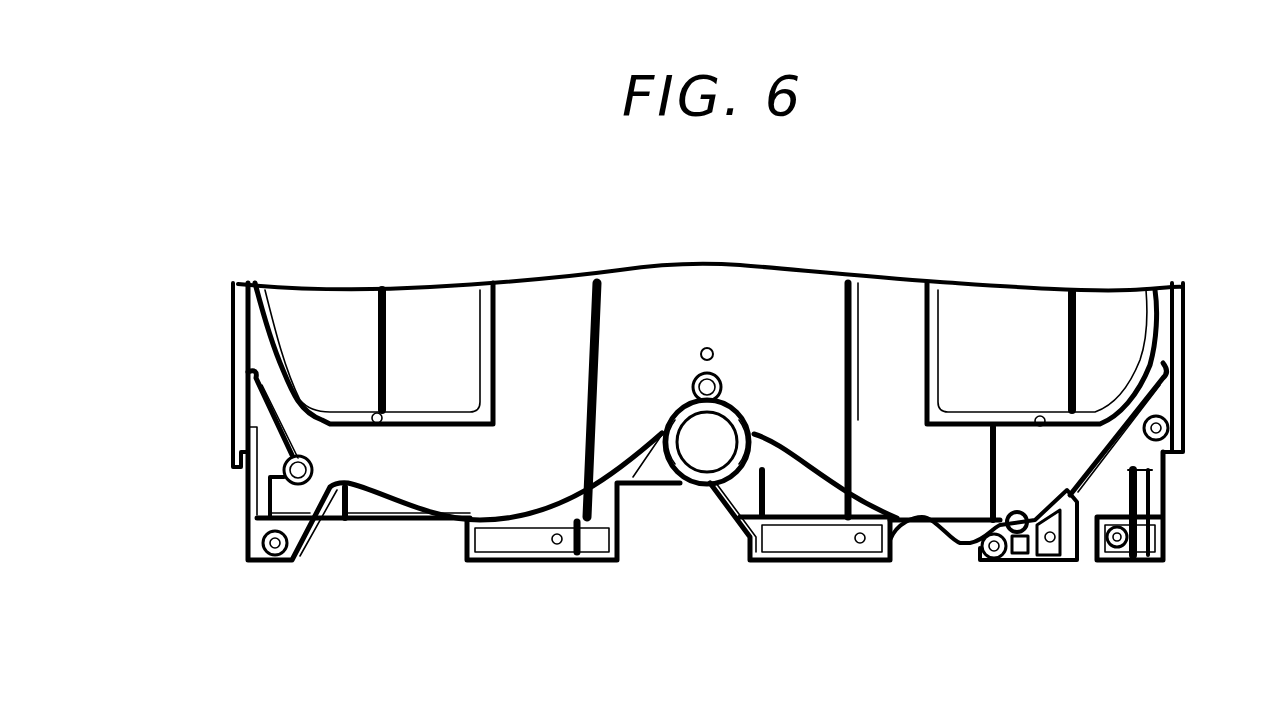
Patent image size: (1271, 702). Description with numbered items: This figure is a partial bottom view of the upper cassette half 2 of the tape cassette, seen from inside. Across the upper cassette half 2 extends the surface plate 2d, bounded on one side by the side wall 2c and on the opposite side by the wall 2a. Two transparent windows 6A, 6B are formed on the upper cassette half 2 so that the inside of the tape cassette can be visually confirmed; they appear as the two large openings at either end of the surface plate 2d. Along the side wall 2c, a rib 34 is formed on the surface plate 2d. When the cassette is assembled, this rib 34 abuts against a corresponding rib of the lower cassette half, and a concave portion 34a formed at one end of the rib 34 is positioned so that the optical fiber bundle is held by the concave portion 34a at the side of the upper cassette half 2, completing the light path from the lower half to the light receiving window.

The upper cassette half 2 is at (1128, 290).
The right side wall of chassis 2a is at (1186, 357).
The side wall 2c is at (237, 344).
The surface plate 2d is at (553, 293).
The transparent window 6A is at (950, 311).
The transparent window 6B is at (479, 307).
The rib 34 is at (262, 397).
The concave portion 34a is at (258, 494).